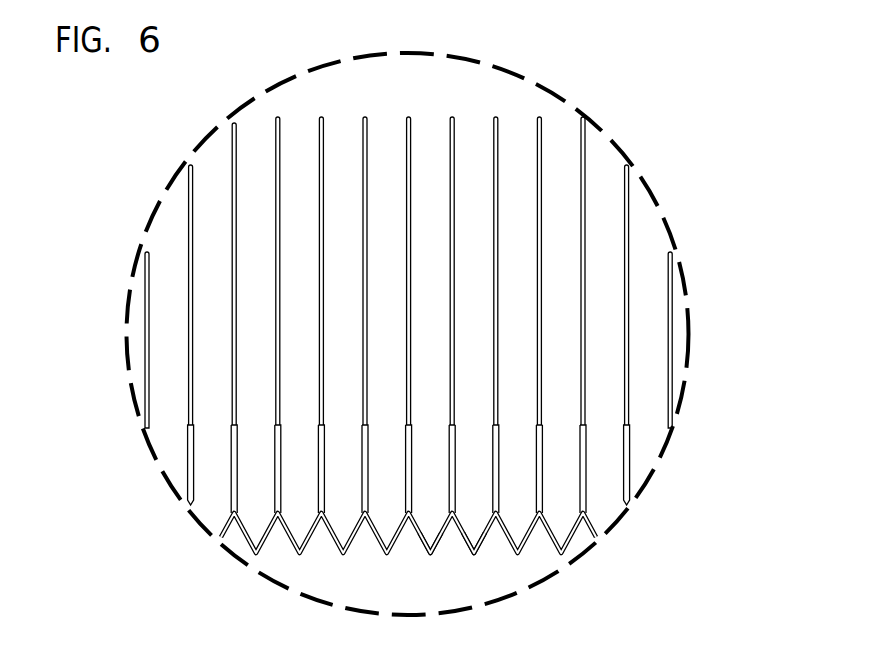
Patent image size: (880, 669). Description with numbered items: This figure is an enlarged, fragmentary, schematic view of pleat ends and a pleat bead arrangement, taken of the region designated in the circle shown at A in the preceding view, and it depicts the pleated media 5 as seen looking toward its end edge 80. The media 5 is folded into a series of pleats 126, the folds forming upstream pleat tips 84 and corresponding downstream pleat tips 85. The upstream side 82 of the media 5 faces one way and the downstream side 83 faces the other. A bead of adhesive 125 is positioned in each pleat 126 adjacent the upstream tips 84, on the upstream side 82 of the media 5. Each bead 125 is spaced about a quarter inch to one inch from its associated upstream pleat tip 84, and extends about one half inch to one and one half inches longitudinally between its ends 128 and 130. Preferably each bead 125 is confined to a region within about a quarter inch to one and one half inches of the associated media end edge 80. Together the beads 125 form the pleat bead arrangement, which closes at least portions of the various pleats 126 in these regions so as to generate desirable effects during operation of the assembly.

The media 5 is at (603, 230).
The circle region A is at (563, 100).
The end edge 80 is at (320, 118).
The downstream pleat tips 85 is at (408, 118).
The upstream side 82 is at (352, 537).
The upstream pleat tips 84 is at (430, 550).
The downstream side 83 is at (323, 452).
The bead of adhesive 125 is at (410, 457).
The pleat 126 is at (453, 313).
The bead end 128 is at (457, 510).
The bead end 130 is at (453, 425).